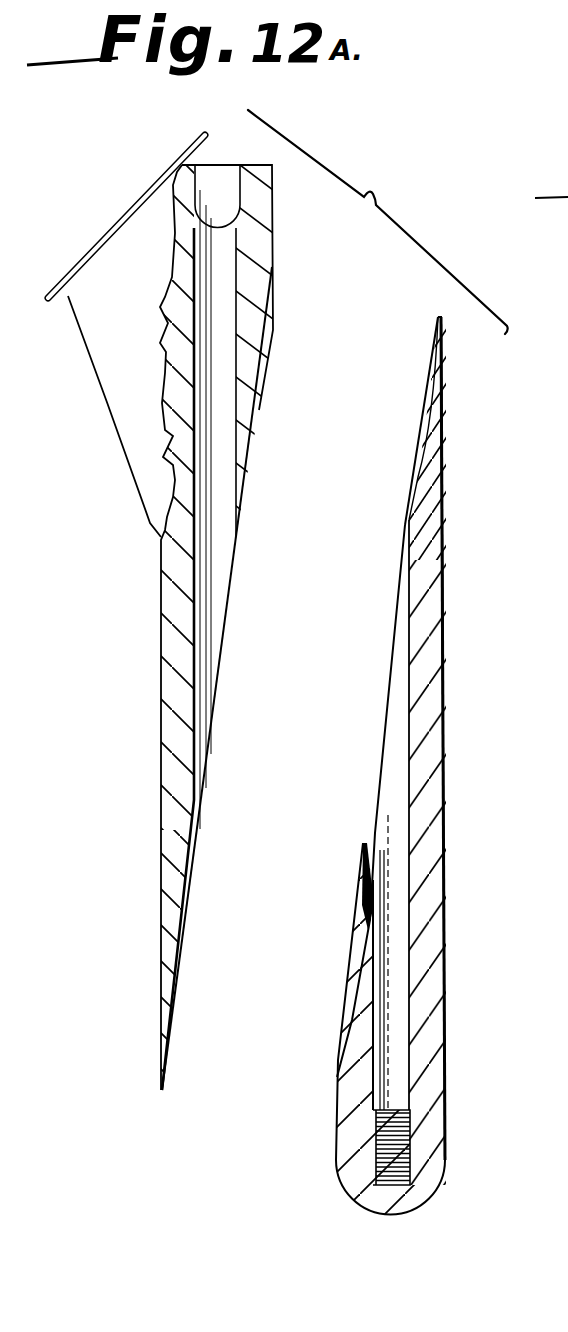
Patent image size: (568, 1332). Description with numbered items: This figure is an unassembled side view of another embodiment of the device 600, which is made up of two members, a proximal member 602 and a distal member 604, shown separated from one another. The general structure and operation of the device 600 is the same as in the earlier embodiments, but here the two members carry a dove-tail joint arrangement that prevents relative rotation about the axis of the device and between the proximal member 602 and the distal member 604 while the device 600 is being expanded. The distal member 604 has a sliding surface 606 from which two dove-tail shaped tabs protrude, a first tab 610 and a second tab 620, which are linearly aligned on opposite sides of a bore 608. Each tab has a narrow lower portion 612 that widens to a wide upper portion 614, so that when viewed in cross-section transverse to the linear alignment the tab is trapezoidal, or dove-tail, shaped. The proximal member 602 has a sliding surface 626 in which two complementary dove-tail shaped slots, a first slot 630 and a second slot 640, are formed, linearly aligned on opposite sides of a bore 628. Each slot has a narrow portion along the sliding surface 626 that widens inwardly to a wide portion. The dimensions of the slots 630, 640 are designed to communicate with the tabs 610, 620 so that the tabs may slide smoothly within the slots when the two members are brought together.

The device 600 is at (96, 414).
The proximal member 602 is at (160, 585).
The distal member 604 is at (437, 969).
The sliding surface 606 is at (401, 747).
The bore 608 is at (397, 662).
The tab 610 is at (417, 478).
The narrow lower portion 612 is at (443, 352).
The wide upper portion 614 is at (438, 316).
The tab 620 is at (338, 1047).
The sliding surface 626 is at (199, 851).
The bore 628 is at (226, 618).
The slot 630 is at (251, 440).
The slot 640 is at (184, 905).